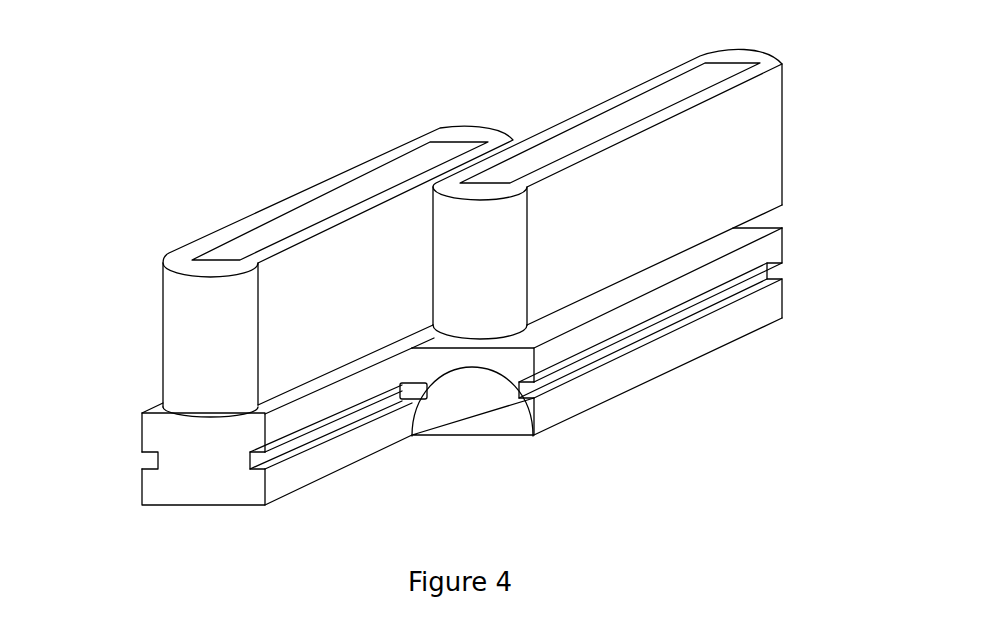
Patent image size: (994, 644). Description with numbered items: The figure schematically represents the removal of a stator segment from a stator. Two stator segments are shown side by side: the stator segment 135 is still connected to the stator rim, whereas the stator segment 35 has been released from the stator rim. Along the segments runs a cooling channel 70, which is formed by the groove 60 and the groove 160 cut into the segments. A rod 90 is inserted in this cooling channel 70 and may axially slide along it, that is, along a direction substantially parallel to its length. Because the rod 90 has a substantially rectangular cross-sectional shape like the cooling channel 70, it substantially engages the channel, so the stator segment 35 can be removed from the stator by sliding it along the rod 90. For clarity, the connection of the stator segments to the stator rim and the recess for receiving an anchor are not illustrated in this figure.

The stator segment 35 is at (232, 197).
The stator segment 135 is at (594, 76).
The groove 60 is at (156, 466).
The cooling channel 70 is at (441, 391).
The rod 90 is at (418, 403).
The groove 160 is at (533, 436).